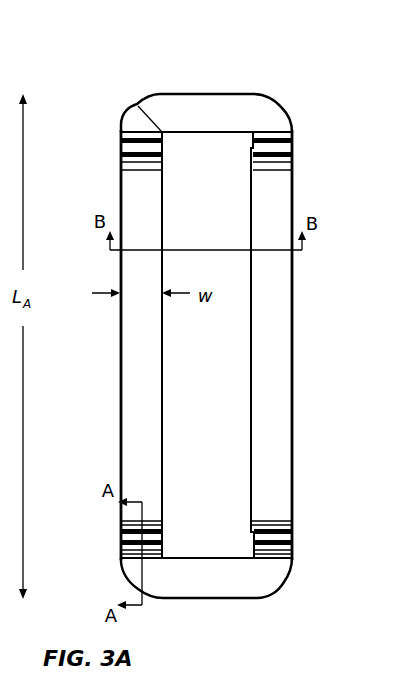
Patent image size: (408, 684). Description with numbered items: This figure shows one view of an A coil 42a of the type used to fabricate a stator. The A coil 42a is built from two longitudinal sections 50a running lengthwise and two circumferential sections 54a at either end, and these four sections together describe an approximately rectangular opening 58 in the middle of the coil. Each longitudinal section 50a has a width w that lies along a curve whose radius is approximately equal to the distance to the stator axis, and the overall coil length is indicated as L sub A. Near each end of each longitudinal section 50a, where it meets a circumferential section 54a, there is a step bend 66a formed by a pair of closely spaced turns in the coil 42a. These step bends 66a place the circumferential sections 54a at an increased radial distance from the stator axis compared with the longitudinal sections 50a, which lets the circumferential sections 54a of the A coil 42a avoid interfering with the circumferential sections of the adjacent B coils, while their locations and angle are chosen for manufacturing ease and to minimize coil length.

The A coil 42a is at (215, 351).
The longitudinal section 50a is at (100, 170).
The circumferential section 54a is at (290, 72).
The rectangular opening 58 is at (217, 483).
The step bend 66a is at (104, 150).